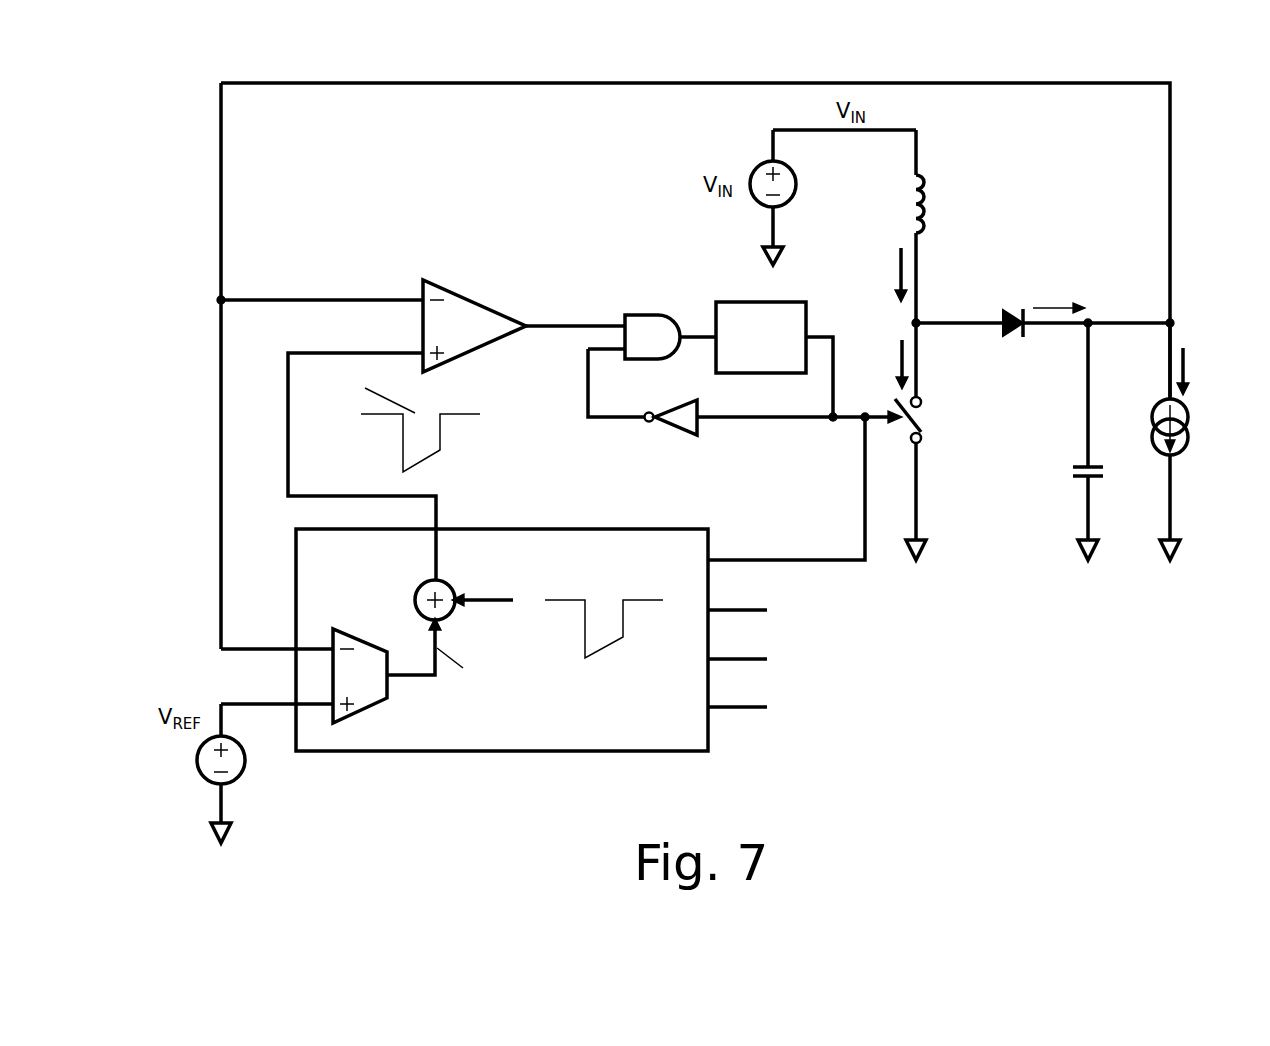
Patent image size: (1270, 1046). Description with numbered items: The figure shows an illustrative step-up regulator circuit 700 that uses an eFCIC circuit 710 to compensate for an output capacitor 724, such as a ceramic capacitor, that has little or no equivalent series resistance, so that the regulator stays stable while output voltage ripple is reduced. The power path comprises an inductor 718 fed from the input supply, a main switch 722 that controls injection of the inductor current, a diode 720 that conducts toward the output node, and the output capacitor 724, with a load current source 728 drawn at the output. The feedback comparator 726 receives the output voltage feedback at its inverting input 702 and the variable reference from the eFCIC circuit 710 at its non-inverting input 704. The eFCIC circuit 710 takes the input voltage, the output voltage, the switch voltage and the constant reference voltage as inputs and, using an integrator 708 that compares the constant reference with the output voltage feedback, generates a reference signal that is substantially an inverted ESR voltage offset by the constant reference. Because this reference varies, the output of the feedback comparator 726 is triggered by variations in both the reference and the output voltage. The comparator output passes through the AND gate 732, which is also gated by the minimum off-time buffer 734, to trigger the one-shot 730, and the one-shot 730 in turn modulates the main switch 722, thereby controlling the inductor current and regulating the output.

The step-up regulator circuit 700 is at (898, 72).
The inverting input 702 is at (277, 296).
The non-inverting input 704 is at (282, 368).
The integrator 708 is at (375, 715).
The eFCIC circuit 710 is at (550, 751).
The inductor 718 is at (925, 178).
The diode 720 is at (1010, 308).
The main switch 722 is at (925, 445).
The output capacitor 724 is at (1096, 482).
The feedback comparator 726 is at (503, 313).
The load current source 728 is at (1188, 420).
The one-shot 730 is at (806, 322).
The AND gate 732 is at (642, 315).
The buffer 734 is at (700, 432).